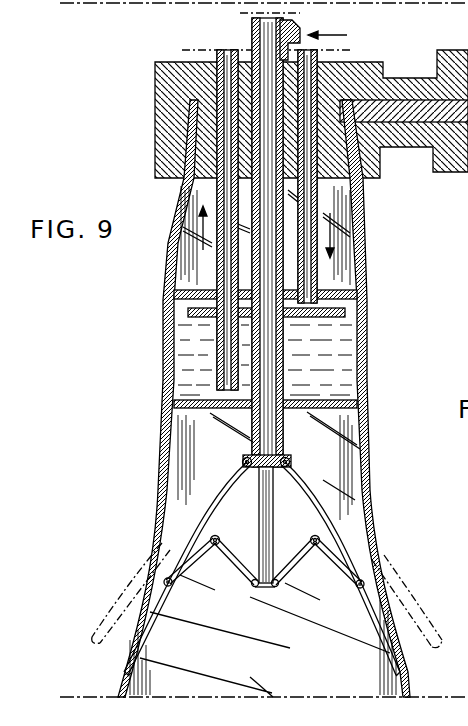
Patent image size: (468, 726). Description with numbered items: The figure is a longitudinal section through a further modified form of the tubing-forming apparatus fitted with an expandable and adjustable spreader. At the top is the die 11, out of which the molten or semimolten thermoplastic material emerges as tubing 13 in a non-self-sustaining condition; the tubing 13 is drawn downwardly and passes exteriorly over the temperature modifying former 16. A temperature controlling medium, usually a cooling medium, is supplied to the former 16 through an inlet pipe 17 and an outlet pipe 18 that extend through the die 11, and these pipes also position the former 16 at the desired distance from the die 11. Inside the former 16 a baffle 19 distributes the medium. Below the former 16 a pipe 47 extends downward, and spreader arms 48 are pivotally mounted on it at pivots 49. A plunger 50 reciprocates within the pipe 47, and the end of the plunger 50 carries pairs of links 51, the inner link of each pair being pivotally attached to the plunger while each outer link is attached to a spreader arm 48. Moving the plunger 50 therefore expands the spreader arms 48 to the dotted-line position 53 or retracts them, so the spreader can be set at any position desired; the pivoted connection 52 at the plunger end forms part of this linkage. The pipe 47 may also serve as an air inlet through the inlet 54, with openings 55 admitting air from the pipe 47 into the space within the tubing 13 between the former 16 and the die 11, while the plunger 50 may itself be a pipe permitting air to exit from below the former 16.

The die 11 is at (158, 90).
The tubing 13 is at (266, 398).
The temperature modifying former 16 is at (357, 294).
The inlet pipe 17 is at (320, 58).
The outlet pipe 18 is at (218, 50).
The baffle 19 is at (343, 319).
The pipe 47 is at (283, 421).
The spreader arms 48 is at (218, 497).
The pivots 49 is at (291, 462).
The plunger 50 is at (265, 530).
The links 51 is at (185, 573).
The rod end pivot 52 is at (272, 591).
The expanded position of spreader arms 53 is at (108, 598).
The inlet 54 is at (292, 33).
The openings 55 is at (283, 240).